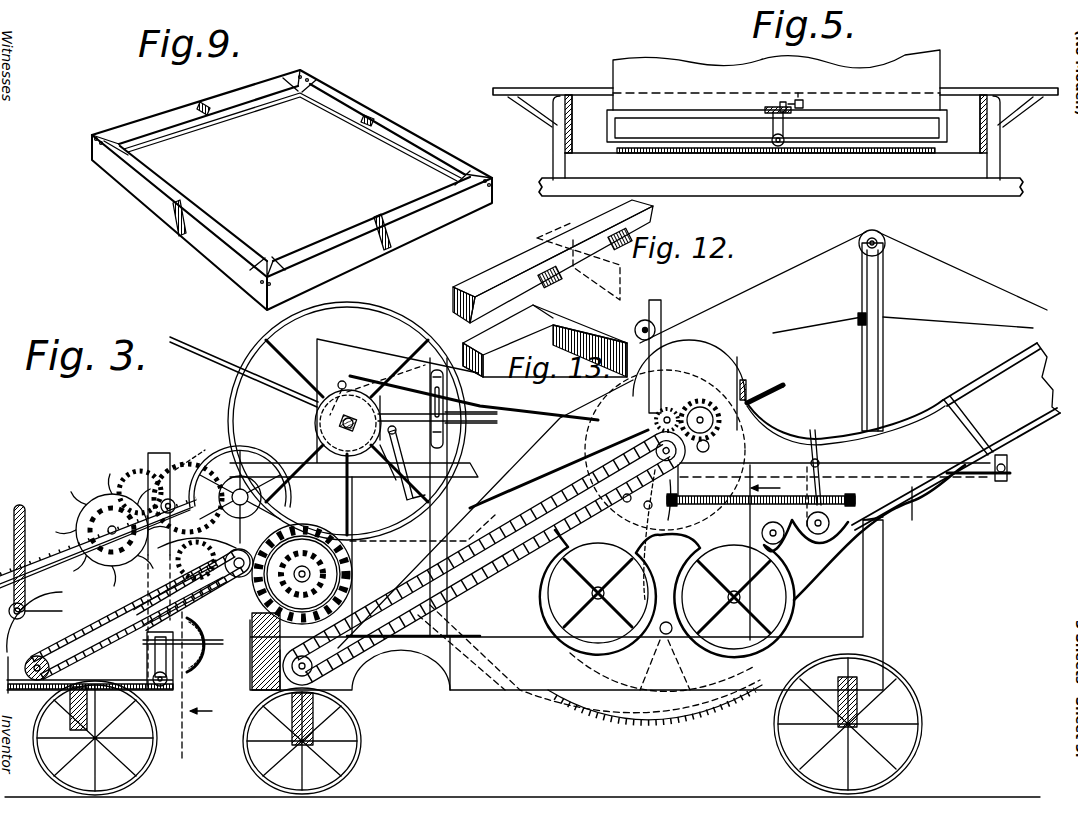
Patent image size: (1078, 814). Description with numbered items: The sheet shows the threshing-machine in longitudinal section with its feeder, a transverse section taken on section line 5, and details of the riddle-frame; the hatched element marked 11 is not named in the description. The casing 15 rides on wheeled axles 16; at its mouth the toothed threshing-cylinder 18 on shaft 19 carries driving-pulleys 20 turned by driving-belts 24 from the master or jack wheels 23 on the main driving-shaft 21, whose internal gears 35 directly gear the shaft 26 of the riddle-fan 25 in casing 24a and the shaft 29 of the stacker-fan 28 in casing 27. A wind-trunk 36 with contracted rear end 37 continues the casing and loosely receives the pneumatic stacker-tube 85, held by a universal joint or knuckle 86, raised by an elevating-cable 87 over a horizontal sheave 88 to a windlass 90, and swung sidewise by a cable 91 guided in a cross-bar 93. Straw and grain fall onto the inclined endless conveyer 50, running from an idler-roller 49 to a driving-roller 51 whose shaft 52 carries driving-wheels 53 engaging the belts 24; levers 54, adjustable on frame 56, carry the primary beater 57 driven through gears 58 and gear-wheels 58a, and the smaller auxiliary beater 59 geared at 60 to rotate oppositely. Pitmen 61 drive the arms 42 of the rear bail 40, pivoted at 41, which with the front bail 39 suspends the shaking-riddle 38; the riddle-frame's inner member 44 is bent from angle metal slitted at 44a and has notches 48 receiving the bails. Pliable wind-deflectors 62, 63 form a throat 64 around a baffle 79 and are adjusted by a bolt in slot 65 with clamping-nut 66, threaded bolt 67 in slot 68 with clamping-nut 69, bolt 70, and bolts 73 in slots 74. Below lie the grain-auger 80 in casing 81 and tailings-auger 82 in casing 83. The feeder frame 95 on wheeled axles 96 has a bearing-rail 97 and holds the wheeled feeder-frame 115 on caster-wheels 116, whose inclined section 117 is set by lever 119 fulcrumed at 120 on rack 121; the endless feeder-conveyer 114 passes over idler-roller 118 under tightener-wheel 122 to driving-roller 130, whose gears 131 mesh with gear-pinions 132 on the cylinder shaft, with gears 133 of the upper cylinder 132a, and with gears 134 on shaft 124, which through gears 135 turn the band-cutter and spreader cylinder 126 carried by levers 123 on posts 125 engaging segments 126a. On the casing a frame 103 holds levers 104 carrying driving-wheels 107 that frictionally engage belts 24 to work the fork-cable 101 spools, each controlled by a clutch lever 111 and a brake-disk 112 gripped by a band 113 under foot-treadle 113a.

In FIG. 3, the section line 5 is at (185, 625).
In FIG. 3, the frame post 11 is at (275, 636).
In FIG. 3, the frame or casing 15 is at (805, 603).
In FIG. 3, the wheeled axles 16 is at (306, 752).
In FIG. 3, the threshing-cylinder 18 is at (340, 598).
In FIG. 3, the threshing-cylinder shaft 19 is at (312, 588).
In FIG. 3, the driving-pulleys 20 is at (352, 568).
In FIG. 3, the main driving-shaft 21 is at (664, 636).
In FIG. 3, the master or jack wheels 23 is at (652, 730).
In FIG. 3, the driving-belts 24 is at (549, 714).
In FIG. 3, the riddle-fan casing 24a is at (540, 580).
In FIG. 3, the riddle-fan 25 is at (580, 600).
In FIG. 3, the riddle-fan shaft 26 is at (600, 616).
In FIG. 3, the stacker-fan casing 27 is at (708, 656).
In FIG. 3, the stacker-fan 28 is at (752, 588).
In FIG. 3, the stacker-fan shaft 29 is at (722, 603).
In FIG. 3, the internal gears 35 is at (706, 722).
In FIG. 3, the wind-trunk 36 is at (913, 500).
In FIG. 3, the contracted rear end 37 is at (958, 409).
In FIG. 3, the shaking-riddle 38 is at (771, 500).
In FIG. 3, the front bail 39 is at (681, 492).
In FIG. 3, the rear bail 40 is at (820, 478).
In FIG. 3, the pivot 41 is at (820, 463).
In FIG. 3, the arms 42 is at (809, 451).
In FIG. 9, the inner frame member 44 is at (292, 190).
In FIG. 12, the inner frame member 44 is at (495, 268).
In FIG. 13, the inner frame member 44 is at (498, 333).
In FIG. 12, the slits 44a is at (575, 233).
In FIG. 9, the notches 48 is at (169, 139).
In FIG. 3, the idler-roller 49 is at (308, 665).
In FIG. 3, the inclined endless conveyer 50 is at (478, 583).
In FIG. 3, the driving-roller 51 is at (625, 441).
In FIG. 3, the driving-roller shaft 52 is at (640, 419).
In FIG. 3, the driving-wheels 53 is at (576, 425).
In FIG. 3, the levers 54 is at (777, 391).
In FIG. 3, the frame 56 is at (746, 371).
In FIG. 3, the primary beater 57 is at (710, 449).
In FIG. 3, the gears 58 is at (648, 408).
In FIG. 3, the gear-wheels 58a is at (695, 405).
In FIG. 3, the auxiliary beater 59 is at (663, 412).
In FIG. 3, the gearing 60 is at (680, 372).
In FIG. 3, the pitmen 61 is at (771, 419).
In FIG. 3, the wind-deflector 62 is at (648, 505).
In FIG. 3, the wind-deflector 63 is at (668, 580).
In FIG. 3, the throat 64 is at (708, 508).
In FIG. 3, the slot 65 is at (624, 497).
In FIG. 3, the clamping-nut 66 is at (685, 587).
In FIG. 3, the threaded bolt 67 is at (608, 514).
In FIG. 3, the slot 68 is at (626, 521).
In FIG. 3, the clamping-nut 69 is at (619, 507).
In FIG. 3, the bolt 70 is at (664, 512).
In FIG. 3, the bolts 73 is at (734, 529).
In FIG. 3, the slots 74 is at (740, 525).
In FIG. 3, the baffle 79 is at (659, 549).
In FIG. 3, the grain-auger 80 is at (776, 524).
In FIG. 3, the grain-auger casing 81 is at (786, 541).
In FIG. 3, the tailings-auger 82 is at (818, 536).
In FIG. 3, the tailings-auger casing 83 is at (826, 550).
In FIG. 3, the pneumatic stacker-tube 85 is at (956, 436).
In FIG. 3, the universal joint or knuckle 86 is at (1008, 464).
In FIG. 3, the elevating-cable 87 is at (940, 262).
In FIG. 3, the horizontal sheave 88 is at (882, 238).
In FIG. 3, the windlass 90 is at (641, 327).
In FIG. 3, the adjusting cable 91 is at (805, 331).
In FIG. 3, the cross-bar 93 is at (860, 313).
In FIG. 5, the feeder frame 95 is at (585, 146).
In FIG. 5, the wheeled axles 96 is at (970, 145).
In FIG. 3, the wheeled axles 96 is at (100, 720).
In FIG. 5, the bearing-rail or bottom 97 is at (873, 150).
In FIG. 3, the bearing-rail or bottom 97 is at (176, 712).
In FIG. 3, the fork-cable 101 is at (236, 354).
In FIG. 3, the frame 103 is at (316, 356).
In FIG. 3, the levers 104 is at (414, 413).
In FIG. 3, the driving-wheels 107 is at (414, 323).
In FIG. 3, the clutch lever 111 is at (470, 426).
In FIG. 3, the brake-disk 112 is at (316, 427).
In FIG. 3, the band or shoe 113 is at (339, 384).
In FIG. 3, the foot-treadle 113a is at (401, 494).
In FIG. 3, the endless feeder-conveyer 114 is at (118, 641).
In FIG. 5, the wheeled feeder-frame 115 is at (777, 126).
In FIG. 3, the wheeled feeder-frame 115 is at (27, 505).
In FIG. 5, the caster-wheels 116 is at (786, 138).
In FIG. 3, the caster-wheels 116 is at (172, 683).
In FIG. 5, the inclined adjustable section 117 is at (776, 80).
In FIG. 3, the inclined adjustable section 117 is at (218, 636).
In FIG. 3, the idler-roller 118 is at (47, 666).
In FIG. 3, the lever 119 is at (204, 654).
In FIG. 5, the fulcrum 120 is at (812, 100).
In FIG. 3, the fulcrum 120 is at (155, 594).
In FIG. 3, the rack or segment 121 is at (205, 668).
In FIG. 3, the tightener-wheel 122 is at (62, 605).
In FIG. 3, the levers 123 is at (60, 546).
In FIG. 3, the shaft 124 is at (167, 500).
In FIG. 3, the posts 125 is at (160, 455).
In FIG. 3, the band-cutter and spreader cylinder 126 is at (98, 500).
In FIG. 3, the segments 126a is at (78, 530).
In FIG. 3, the driving-roller 130 is at (231, 566).
In FIG. 3, the gears 131 is at (205, 557).
In FIG. 3, the gear-pinions 132 is at (346, 497).
In FIG. 3, the cylinder 132a is at (262, 455).
In FIG. 3, the gears 133 is at (208, 462).
In FIG. 3, the gears 134 is at (183, 474).
In FIG. 3, the gears 135 is at (123, 491).